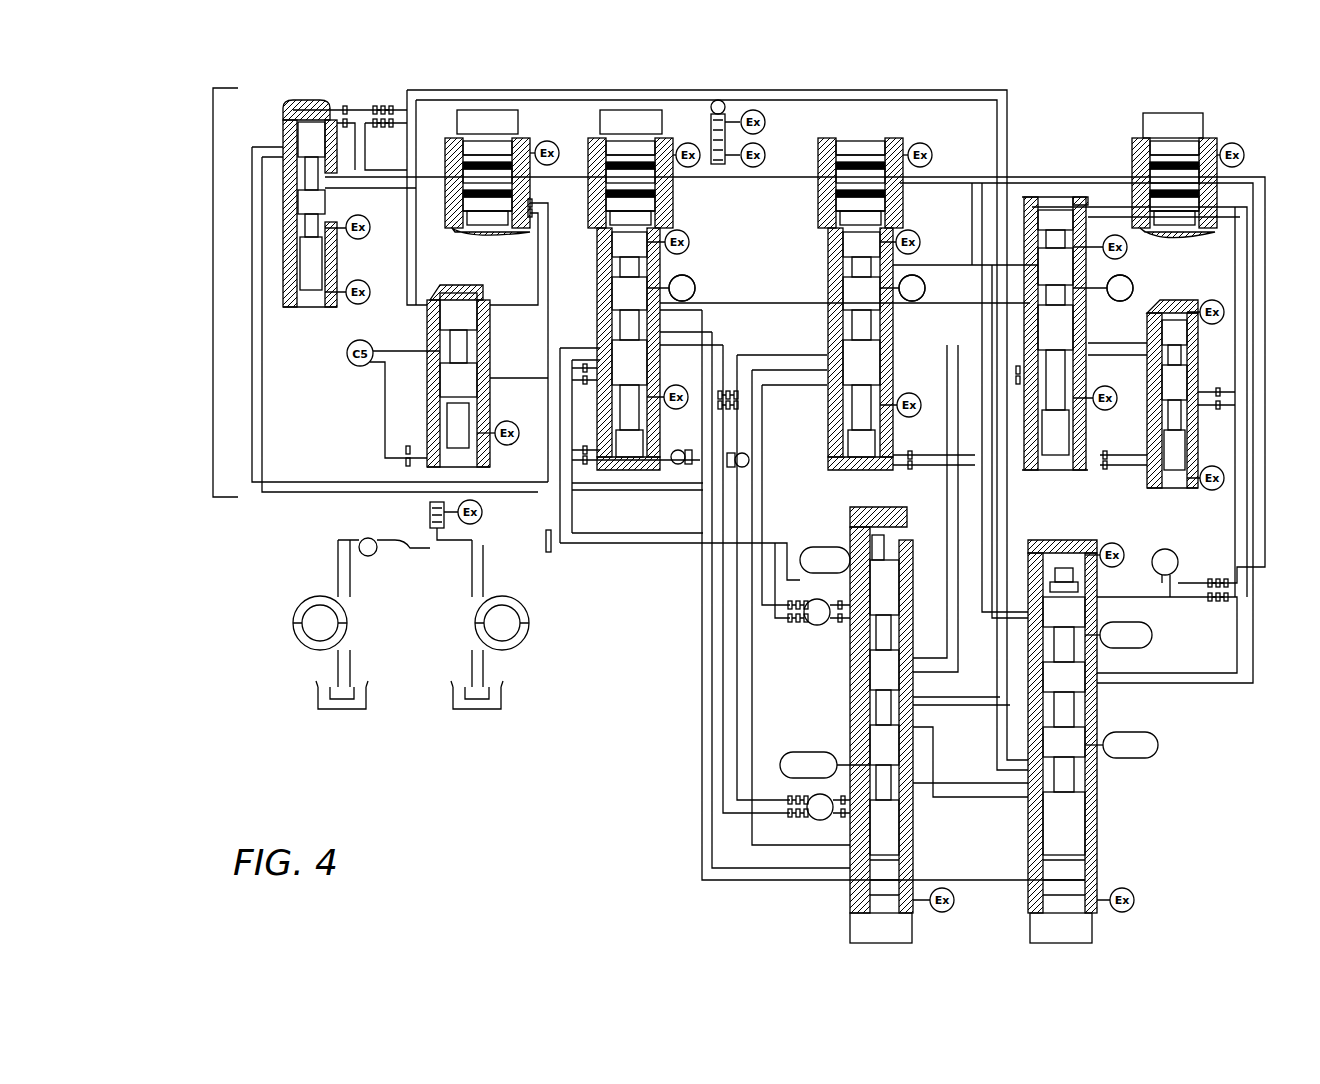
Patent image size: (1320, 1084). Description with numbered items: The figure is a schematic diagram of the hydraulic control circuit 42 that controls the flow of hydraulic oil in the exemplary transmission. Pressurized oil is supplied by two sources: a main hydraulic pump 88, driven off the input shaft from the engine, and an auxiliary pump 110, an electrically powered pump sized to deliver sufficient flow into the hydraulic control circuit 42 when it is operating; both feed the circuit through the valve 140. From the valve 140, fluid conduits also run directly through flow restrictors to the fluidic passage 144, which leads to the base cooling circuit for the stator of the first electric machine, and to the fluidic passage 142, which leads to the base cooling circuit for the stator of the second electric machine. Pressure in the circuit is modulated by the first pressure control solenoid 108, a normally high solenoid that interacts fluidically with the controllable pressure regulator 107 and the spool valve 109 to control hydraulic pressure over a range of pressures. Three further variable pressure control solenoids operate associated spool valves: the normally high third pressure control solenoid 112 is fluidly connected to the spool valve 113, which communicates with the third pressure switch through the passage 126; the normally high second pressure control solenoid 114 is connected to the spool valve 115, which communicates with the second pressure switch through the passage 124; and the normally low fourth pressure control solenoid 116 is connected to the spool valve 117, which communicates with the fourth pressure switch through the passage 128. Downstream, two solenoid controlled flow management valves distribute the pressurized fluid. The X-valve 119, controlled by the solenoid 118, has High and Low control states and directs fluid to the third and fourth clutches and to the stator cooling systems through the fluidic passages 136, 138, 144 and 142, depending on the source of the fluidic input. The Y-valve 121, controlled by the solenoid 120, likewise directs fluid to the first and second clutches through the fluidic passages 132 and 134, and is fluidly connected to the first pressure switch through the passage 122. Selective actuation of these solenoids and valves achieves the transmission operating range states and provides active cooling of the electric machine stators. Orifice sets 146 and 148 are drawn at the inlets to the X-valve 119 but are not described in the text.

The hydraulic control circuit 42 is at (213, 165).
The main hydraulic pump 88 is at (505, 648).
The controllable pressure regulator 107 is at (311, 300).
The pressure control solenoid PCS1 108 is at (465, 110).
The spool valve 109 is at (470, 313).
The auxiliary pump 110 is at (315, 648).
The pressure control solenoid PCS3 112 is at (1150, 118).
The spool valve 113 is at (1060, 325).
The pressure control solenoid PCS2 114 is at (835, 110).
The spool valve 115 is at (845, 225).
The pressure control solenoid PCS4 116 is at (620, 110).
The spool valve 117 is at (606, 282).
The solenoid 118 is at (865, 935).
The X-valve 119 is at (873, 688).
The solenoid 120 is at (1045, 935).
The Y-valve 121 is at (1080, 795).
The passage 122 is at (1180, 549).
The passage 124 is at (925, 275).
The passage 126 is at (1130, 278).
The passage 128 is at (698, 282).
The fluidic passage 132 is at (1158, 745).
The fluidic passage 134 is at (1152, 635).
The fluidic passage 136 is at (805, 752).
The fluidic passage 138 is at (818, 547).
The valve 140 is at (360, 540).
The fluidic passage 142 is at (818, 820).
The fluidic passage 144 is at (815, 626).
The orifice set 146 is at (790, 628).
The orifice set 148 is at (790, 822).